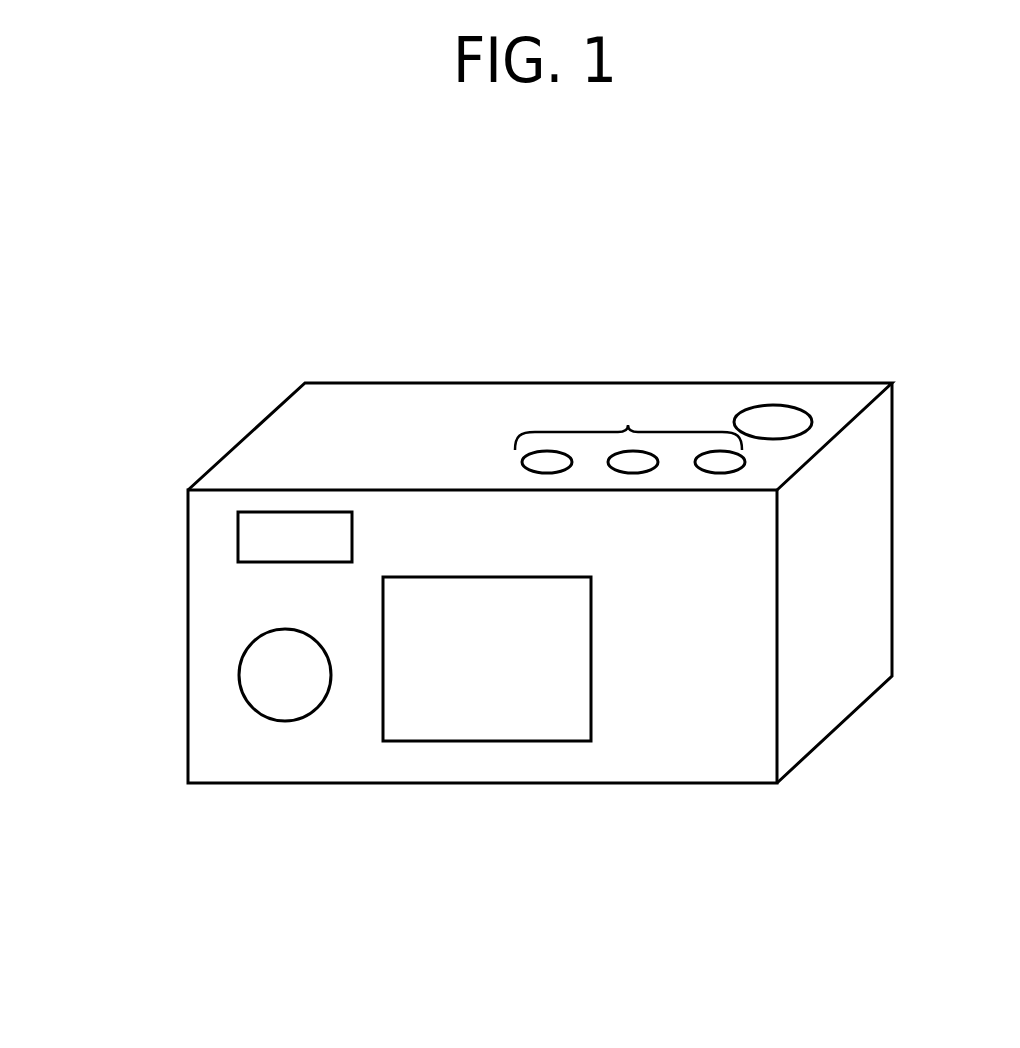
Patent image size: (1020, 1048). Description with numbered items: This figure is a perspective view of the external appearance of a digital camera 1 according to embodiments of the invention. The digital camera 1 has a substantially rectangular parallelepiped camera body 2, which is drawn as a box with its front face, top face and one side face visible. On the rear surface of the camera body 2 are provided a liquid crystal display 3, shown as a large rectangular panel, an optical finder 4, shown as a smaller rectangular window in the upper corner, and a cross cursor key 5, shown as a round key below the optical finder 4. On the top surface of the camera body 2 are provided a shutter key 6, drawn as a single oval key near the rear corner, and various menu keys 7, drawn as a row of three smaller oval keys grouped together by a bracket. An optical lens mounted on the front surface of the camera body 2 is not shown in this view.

The digital camera 1 is at (513, 336).
The camera body 2 is at (373, 413).
The liquid crystal display 3 is at (568, 741).
The optical finder 4 is at (248, 510).
The cross cursor key 5 is at (282, 721).
The shutter key 6 is at (775, 406).
The menu keys 7 is at (628, 425).